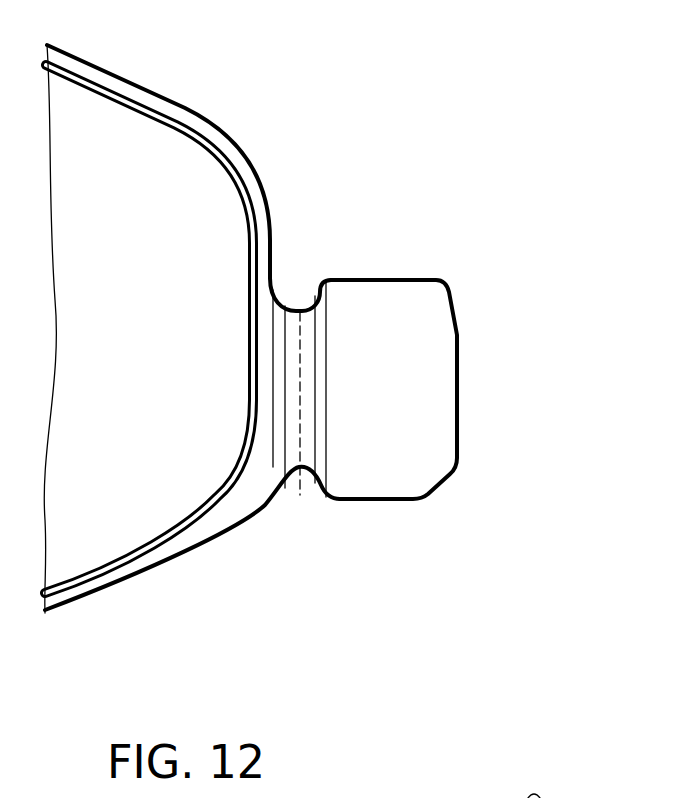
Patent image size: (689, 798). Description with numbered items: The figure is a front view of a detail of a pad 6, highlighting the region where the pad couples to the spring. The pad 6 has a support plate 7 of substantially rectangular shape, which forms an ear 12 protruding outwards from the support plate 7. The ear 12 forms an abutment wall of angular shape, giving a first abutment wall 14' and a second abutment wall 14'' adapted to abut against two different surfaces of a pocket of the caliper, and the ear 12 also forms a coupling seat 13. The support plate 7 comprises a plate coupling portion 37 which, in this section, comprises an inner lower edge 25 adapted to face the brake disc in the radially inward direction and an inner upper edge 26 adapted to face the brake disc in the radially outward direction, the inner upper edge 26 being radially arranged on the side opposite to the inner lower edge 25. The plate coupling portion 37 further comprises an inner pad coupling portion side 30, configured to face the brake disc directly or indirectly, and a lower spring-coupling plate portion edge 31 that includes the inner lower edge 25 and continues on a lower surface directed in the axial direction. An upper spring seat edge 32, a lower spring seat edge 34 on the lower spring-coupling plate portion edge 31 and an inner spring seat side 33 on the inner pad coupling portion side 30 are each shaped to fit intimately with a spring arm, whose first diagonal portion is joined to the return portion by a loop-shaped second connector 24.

The support plate 7 is at (163, 110).
The pad 6 is at (377, 127).
The ear 12 is at (400, 340).
The coupling seat 13 is at (305, 267).
The second connector 24 is at (333, 323).
The inner lower edge 25 is at (288, 483).
The inner upper edge 26 is at (290, 295).
The inner pad coupling portion side 30 is at (392, 435).
The lower spring-coupling plate portion edge 31 is at (307, 493).
The upper spring seat edge 32 is at (313, 288).
The inner spring seat side 33 is at (305, 403).
The lower spring seat edge 34 is at (313, 500).
The plate coupling portion 37 is at (305, 372).
The first abutment wall 14' is at (510, 404).
The second abutment wall 14'' is at (391, 558).